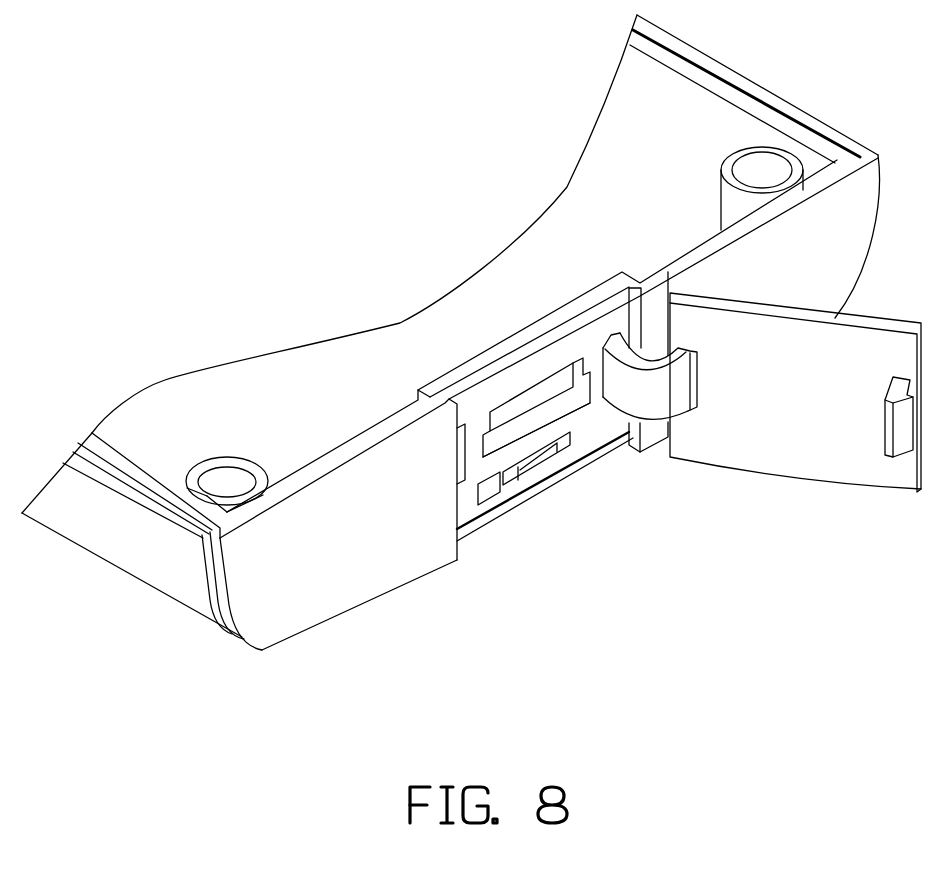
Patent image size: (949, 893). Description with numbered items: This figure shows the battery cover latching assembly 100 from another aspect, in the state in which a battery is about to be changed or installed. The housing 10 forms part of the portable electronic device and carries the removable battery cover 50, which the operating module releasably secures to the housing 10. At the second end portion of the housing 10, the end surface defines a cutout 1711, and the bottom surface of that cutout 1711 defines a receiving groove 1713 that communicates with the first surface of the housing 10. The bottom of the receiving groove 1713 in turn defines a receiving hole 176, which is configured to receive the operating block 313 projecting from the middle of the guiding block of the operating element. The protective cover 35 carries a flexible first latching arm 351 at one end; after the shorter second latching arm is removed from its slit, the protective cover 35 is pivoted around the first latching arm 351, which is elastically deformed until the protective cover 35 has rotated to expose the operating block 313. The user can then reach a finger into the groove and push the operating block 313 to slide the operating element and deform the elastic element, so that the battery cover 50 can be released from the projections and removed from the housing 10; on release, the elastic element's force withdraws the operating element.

The battery cover latching assembly 100 is at (471, 356).
The housing 10 is at (532, 422).
The battery cover 50 is at (133, 540).
The protective cover 35 is at (830, 440).
The first latching arm 351 is at (667, 403).
The cutout 1711 is at (556, 513).
The receiving groove 1713 is at (487, 498).
The receiving hole 176 is at (506, 476).
The operating block 313 is at (535, 463).